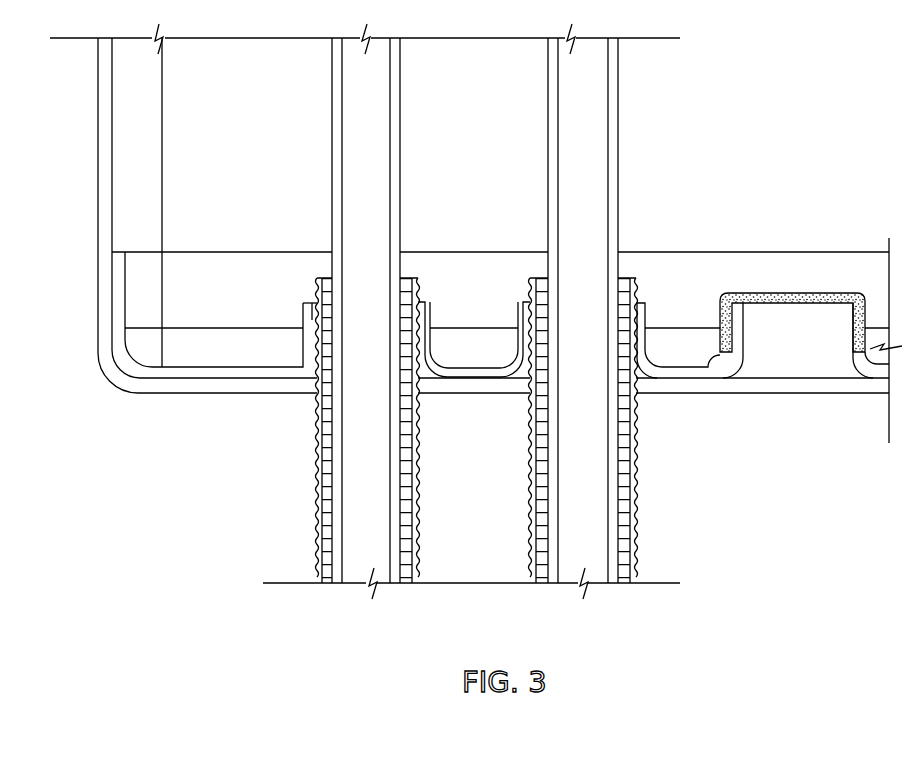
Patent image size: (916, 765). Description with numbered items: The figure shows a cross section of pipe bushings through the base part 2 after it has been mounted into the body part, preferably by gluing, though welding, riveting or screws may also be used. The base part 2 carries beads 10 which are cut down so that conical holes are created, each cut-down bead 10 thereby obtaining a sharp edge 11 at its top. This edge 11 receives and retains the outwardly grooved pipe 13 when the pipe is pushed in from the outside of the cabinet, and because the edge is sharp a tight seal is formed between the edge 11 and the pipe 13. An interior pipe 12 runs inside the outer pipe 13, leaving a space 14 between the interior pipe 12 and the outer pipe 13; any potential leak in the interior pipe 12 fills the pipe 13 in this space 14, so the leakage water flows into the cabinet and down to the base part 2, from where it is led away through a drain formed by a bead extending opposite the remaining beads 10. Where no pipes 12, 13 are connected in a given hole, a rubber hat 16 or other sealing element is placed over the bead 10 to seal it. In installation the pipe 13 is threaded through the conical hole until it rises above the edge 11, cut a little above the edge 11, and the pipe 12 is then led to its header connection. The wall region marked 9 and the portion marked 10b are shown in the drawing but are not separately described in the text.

The base part 2 is at (465, 372).
The container 9 is at (639, 303).
The bead 10 is at (305, 326).
The container bottom 10b is at (310, 345).
The sharp edge 11 is at (312, 310).
The interior pipe 12 is at (337, 100).
The outwardly grooved pipe 13 is at (303, 307).
The space 14 is at (318, 280).
The rubber hat 16 is at (800, 295).